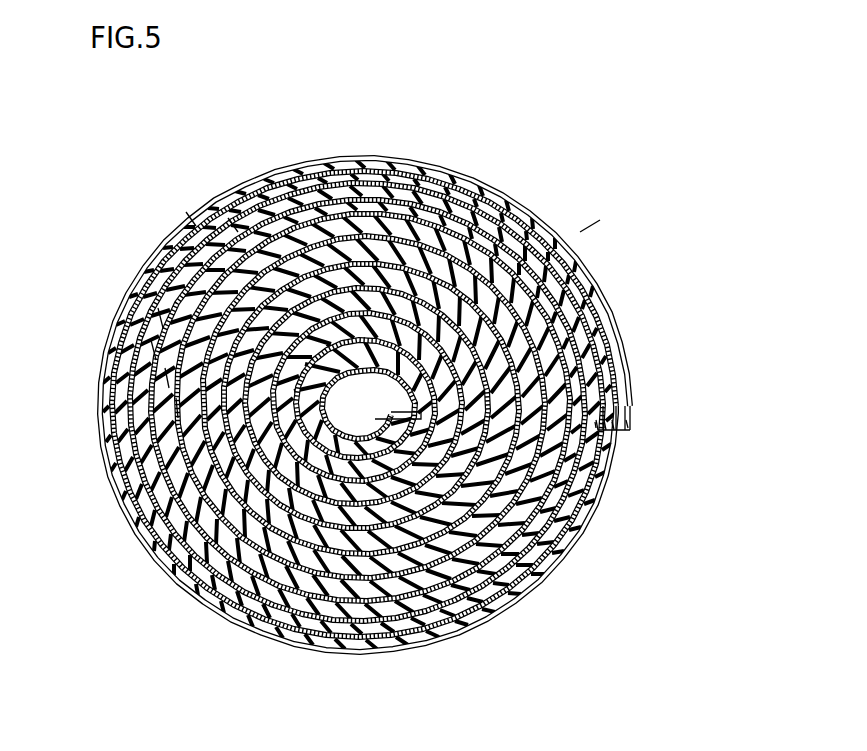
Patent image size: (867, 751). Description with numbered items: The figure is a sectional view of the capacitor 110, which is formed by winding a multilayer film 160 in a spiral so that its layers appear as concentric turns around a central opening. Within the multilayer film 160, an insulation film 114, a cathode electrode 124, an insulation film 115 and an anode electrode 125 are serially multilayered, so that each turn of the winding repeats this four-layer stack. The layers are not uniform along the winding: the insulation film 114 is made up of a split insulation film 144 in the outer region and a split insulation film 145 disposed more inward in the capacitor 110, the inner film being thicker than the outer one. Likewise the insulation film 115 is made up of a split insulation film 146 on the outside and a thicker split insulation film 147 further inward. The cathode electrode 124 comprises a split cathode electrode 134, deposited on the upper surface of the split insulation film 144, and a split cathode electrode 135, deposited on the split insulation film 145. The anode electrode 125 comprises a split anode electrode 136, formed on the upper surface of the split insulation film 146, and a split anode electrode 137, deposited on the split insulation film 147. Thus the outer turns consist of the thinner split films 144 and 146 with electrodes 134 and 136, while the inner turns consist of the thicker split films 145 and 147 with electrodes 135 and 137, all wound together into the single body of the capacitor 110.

The capacitor 110 is at (301, 122).
The multilayer film 160 is at (599, 219).
The split insulation film 144 is at (190, 220).
The split insulation film 146 is at (233, 226).
The split cathode electrode 134 is at (615, 430).
The split anode electrode 136 is at (597, 433).
The split insulation film 145 is at (160, 318).
The split cathode electrode 135 is at (153, 350).
The split insulation film 147 is at (167, 378).
The split anode electrode 137 is at (177, 408).
The insulation film 114 is at (627, 424).
The cathode electrode 124 is at (612, 425).
The insulation film 115 is at (603, 425).
The anode electrode 125 is at (595, 425).